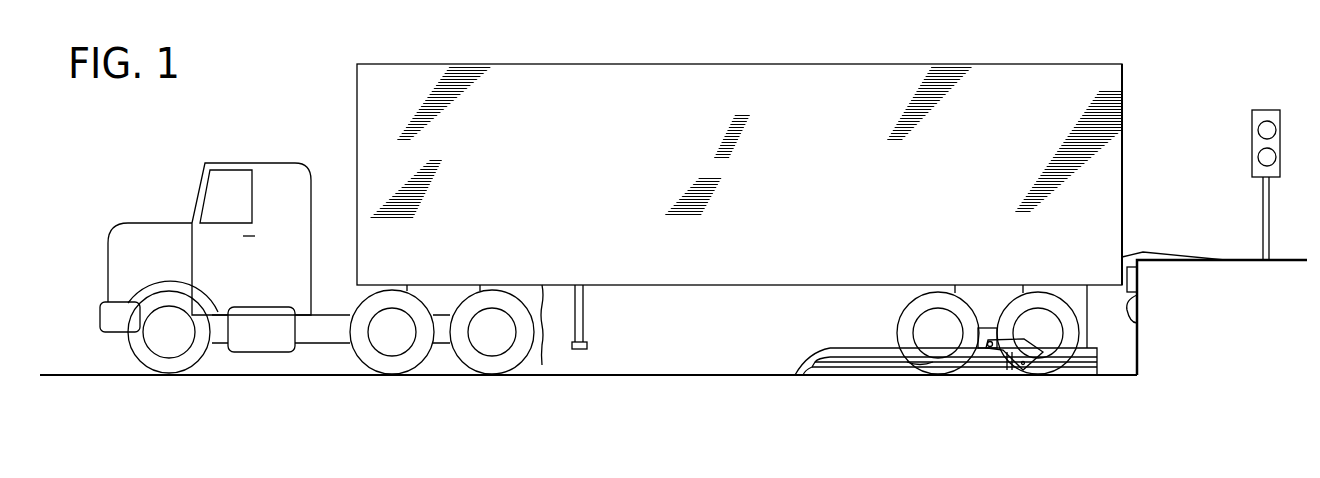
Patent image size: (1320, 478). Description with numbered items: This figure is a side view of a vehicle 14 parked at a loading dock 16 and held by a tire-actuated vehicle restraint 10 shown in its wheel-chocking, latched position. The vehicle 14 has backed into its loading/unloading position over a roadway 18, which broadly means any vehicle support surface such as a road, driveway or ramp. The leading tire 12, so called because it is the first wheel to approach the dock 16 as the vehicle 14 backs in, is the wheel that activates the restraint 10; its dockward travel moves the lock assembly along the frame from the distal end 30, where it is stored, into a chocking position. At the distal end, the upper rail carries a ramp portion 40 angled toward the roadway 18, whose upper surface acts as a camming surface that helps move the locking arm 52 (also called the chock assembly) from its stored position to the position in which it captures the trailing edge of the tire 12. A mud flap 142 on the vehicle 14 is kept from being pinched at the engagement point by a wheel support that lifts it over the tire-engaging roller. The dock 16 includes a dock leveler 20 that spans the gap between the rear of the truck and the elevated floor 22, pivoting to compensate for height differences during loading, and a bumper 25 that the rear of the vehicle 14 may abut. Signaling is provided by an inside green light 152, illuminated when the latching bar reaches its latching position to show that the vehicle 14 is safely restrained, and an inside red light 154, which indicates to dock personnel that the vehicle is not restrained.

The tire-actuated vehicle restraint 10 is at (904, 368).
The leading tire 12 is at (1053, 290).
The vehicle 14 is at (1122, 168).
The loading dock 16 is at (1192, 125).
The roadway 18 is at (620, 376).
The dock leveler 20 is at (1170, 247).
The elevated floor 22 is at (1287, 260).
The bumper 25 is at (1135, 325).
The distal end 30 is at (913, 368).
The ramp portion 40 is at (812, 349).
The locking arm 52 is at (1030, 337).
The mud flap 142 is at (1087, 323).
The green light 152 is at (1257, 150).
The inside red light 154 is at (1257, 128).